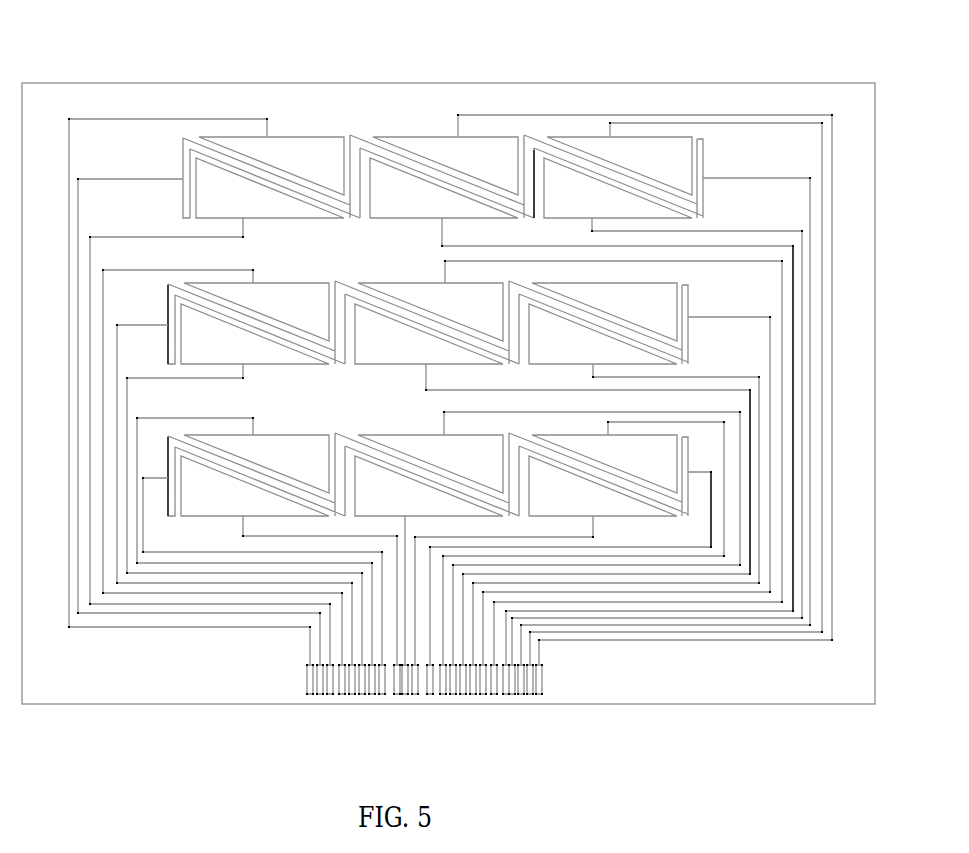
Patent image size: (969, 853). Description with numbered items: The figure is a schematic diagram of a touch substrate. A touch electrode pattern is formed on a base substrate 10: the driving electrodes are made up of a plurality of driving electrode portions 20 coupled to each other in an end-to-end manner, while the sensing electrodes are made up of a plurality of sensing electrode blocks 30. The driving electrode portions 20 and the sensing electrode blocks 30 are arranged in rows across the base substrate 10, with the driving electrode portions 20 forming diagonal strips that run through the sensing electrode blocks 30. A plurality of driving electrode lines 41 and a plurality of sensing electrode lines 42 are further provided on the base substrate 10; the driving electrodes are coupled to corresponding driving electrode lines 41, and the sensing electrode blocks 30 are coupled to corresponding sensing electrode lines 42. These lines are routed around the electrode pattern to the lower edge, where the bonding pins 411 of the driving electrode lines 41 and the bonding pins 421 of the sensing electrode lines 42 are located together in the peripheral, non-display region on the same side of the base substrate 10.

The base substrate 10 is at (807, 96).
The driving electrode portion 20 is at (238, 162).
The sensing electrode block 30 is at (381, 170).
The driving electrode line 41 is at (138, 177).
The sensing electrode line 42 is at (91, 120).
The bonding pin of the driving electrode line 411 is at (380, 690).
The bonding pin of the sensing electrode line 421 is at (395, 690).